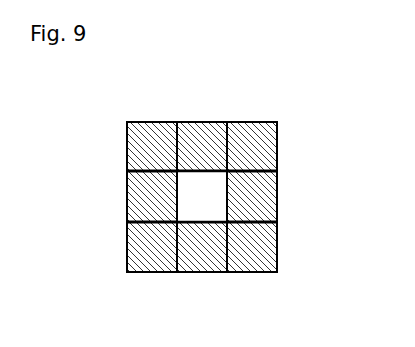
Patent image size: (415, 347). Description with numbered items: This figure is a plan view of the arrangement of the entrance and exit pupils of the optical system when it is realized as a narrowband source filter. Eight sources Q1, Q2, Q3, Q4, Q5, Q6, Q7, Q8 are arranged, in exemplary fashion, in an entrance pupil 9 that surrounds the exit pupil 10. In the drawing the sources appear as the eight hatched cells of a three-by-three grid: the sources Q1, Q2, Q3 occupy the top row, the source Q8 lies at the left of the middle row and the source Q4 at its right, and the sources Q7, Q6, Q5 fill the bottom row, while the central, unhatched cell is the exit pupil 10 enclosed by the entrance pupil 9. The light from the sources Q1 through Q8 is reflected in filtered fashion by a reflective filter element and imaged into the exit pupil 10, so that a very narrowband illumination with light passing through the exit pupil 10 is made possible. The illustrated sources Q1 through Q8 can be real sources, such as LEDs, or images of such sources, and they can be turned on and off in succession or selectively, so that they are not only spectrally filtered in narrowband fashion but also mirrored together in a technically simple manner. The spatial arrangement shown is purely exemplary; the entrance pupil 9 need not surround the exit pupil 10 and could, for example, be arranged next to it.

The entrance pupil 9 is at (278, 134).
The exit pupil 10 is at (207, 190).
The source Q1 is at (155, 122).
The source Q2 is at (207, 122).
The source Q3 is at (264, 122).
The source Q4 is at (268, 184).
The source Q5 is at (270, 251).
The source Q6 is at (204, 263).
The source Q7 is at (145, 260).
The source Q8 is at (127, 196).